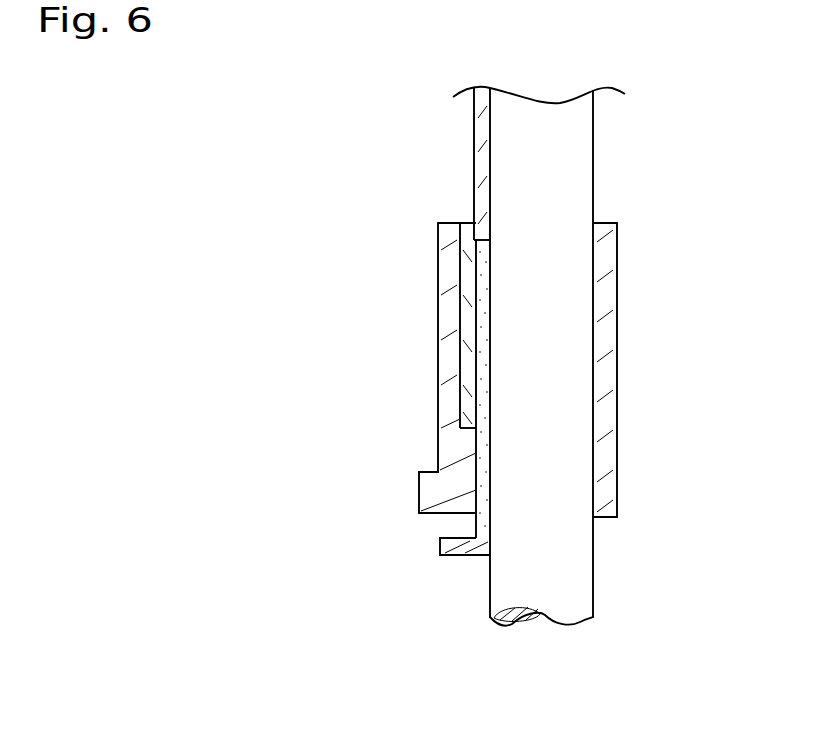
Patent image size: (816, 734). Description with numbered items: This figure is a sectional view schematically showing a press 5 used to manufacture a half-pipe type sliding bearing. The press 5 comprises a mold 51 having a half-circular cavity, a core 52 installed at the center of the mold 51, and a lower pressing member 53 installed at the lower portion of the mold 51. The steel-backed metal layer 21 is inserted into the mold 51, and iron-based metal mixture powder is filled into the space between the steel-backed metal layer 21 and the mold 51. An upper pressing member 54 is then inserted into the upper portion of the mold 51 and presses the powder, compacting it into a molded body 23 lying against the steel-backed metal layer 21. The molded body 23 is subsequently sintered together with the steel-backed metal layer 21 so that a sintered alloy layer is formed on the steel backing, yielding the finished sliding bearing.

The press 5 is at (622, 365).
The steel-backed metal layer 21 is at (448, 310).
The molded body 23 is at (478, 397).
The mold 51 is at (608, 297).
The core 52 is at (583, 560).
The lower pressing member 53 is at (460, 555).
The upper pressing member 54 is at (480, 165).